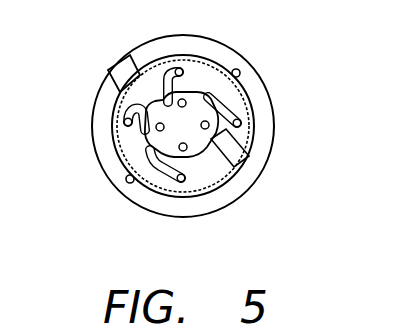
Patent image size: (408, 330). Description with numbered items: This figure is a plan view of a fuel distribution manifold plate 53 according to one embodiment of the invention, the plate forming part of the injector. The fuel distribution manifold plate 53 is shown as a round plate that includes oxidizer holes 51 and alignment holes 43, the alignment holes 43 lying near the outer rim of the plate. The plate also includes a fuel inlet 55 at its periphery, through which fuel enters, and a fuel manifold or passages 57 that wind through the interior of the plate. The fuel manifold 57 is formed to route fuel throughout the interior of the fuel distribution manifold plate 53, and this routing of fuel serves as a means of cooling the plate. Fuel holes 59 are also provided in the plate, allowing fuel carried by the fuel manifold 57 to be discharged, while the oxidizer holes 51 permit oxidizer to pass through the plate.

The alignment holes 43 is at (245, 65).
The fuel distribution manifold plate 53 is at (90, 137).
The fuel manifold or passages 57 is at (162, 195).
The oxidizer holes 51 is at (215, 140).
The fuel inlet 55 is at (113, 70).
The fuel holes 59 is at (210, 190).